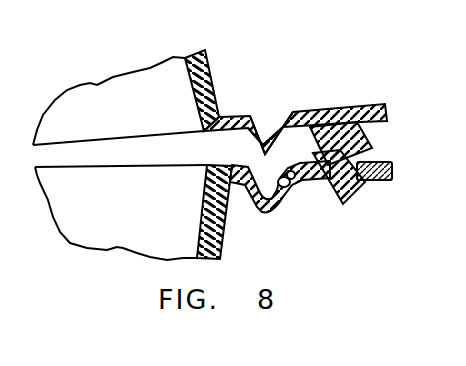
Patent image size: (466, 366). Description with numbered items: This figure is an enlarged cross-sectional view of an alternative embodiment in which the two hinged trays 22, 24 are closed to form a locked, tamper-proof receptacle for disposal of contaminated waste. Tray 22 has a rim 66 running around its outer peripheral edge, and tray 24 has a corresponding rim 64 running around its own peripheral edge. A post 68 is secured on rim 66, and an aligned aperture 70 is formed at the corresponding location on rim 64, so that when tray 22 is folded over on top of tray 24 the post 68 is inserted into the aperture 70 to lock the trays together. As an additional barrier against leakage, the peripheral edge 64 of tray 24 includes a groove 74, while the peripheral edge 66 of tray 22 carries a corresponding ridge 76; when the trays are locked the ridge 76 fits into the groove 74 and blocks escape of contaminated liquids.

The tray 22 is at (208, 63).
The tray 24 is at (226, 228).
The rim 64 is at (393, 168).
The rim 66 is at (386, 106).
The post 68 is at (355, 200).
The aperture 70 is at (363, 166).
The groove 74 is at (294, 190).
The ridge 76 is at (266, 150).